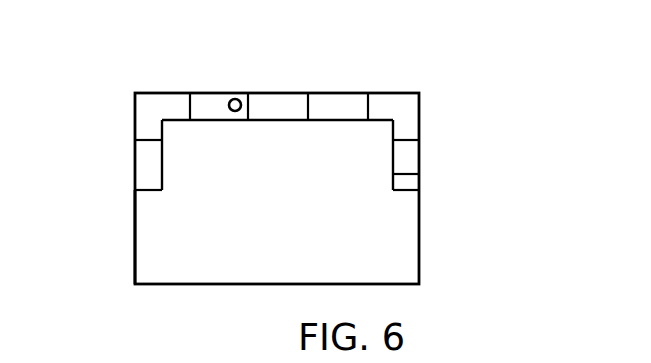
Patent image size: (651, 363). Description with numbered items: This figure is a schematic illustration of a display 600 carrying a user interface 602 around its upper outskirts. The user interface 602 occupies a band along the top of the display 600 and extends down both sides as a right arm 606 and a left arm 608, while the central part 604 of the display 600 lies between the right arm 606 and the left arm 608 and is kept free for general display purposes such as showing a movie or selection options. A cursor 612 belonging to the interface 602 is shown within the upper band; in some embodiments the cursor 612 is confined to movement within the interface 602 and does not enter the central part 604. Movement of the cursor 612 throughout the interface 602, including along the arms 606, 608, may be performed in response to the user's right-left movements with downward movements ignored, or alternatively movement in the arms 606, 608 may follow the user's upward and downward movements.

The display 600 is at (498, 118).
The user interface 602 is at (155, 93).
The central part 604 is at (135, 222).
The right arm 606 is at (83, 140).
The left arm 608 is at (420, 153).
The cursor 612 is at (235, 99).